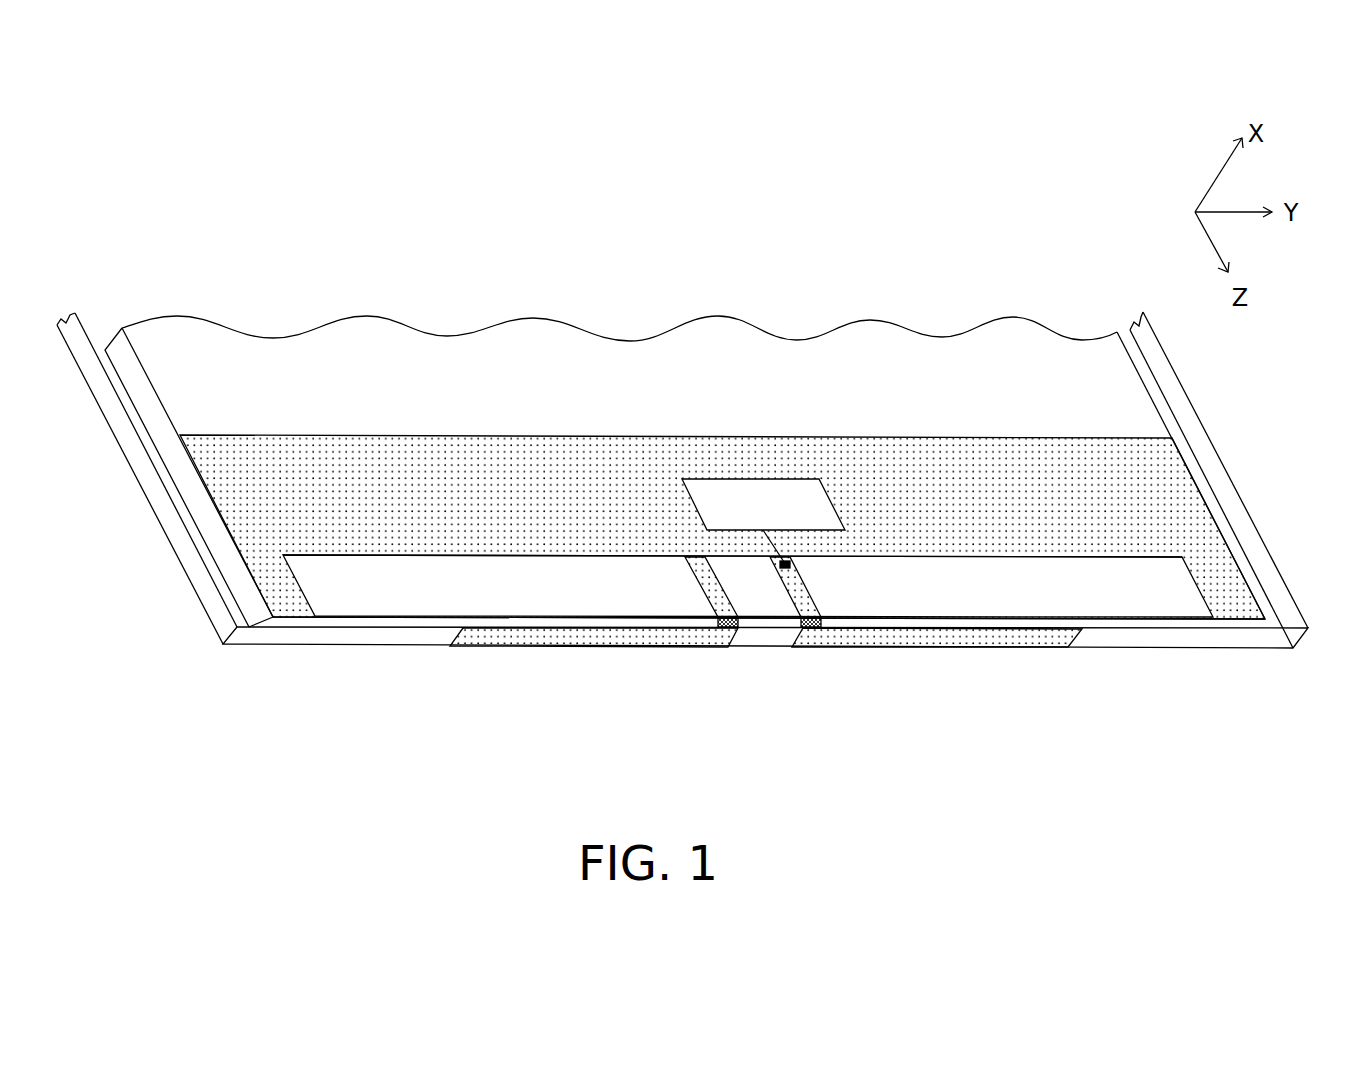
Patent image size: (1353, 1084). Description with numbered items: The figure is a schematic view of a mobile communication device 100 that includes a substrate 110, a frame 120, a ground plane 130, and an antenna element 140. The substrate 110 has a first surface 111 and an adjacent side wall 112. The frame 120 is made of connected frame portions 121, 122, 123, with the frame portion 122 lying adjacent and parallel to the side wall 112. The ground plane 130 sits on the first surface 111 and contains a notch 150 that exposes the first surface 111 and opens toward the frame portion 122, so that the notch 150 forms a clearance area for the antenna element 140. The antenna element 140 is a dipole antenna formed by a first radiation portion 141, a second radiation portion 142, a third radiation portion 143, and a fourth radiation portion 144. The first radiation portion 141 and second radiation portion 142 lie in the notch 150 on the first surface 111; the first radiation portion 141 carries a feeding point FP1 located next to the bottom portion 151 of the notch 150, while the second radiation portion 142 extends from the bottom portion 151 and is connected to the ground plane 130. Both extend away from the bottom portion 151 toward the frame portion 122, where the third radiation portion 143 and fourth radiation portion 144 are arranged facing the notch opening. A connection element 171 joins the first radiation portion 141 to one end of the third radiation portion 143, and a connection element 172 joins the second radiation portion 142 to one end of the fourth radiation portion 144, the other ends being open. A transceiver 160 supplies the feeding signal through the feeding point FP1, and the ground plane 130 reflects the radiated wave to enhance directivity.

The mobile communication device 100 is at (690, 497).
The substrate 110 is at (714, 417).
The first surface 111 is at (1001, 352).
The side wall 112 is at (1272, 628).
The frame 120 is at (682, 464).
The frame portion 121 is at (205, 603).
The frame portion 122 is at (338, 637).
The frame portion 123 is at (1242, 523).
The ground plane 130 is at (333, 472).
The antenna element 140 is at (766, 673).
The first radiation portion 141 is at (803, 605).
The second radiation portion 142 is at (711, 592).
The third radiation portion 143 is at (935, 640).
The fourth radiation portion 144 is at (567, 638).
The notch 150 is at (748, 627).
The bottom portion 151 is at (1152, 558).
The transceiver 160 is at (838, 503).
The connection element 171 is at (816, 624).
The connection element 172 is at (736, 624).
The feeding point FP1 is at (791, 566).